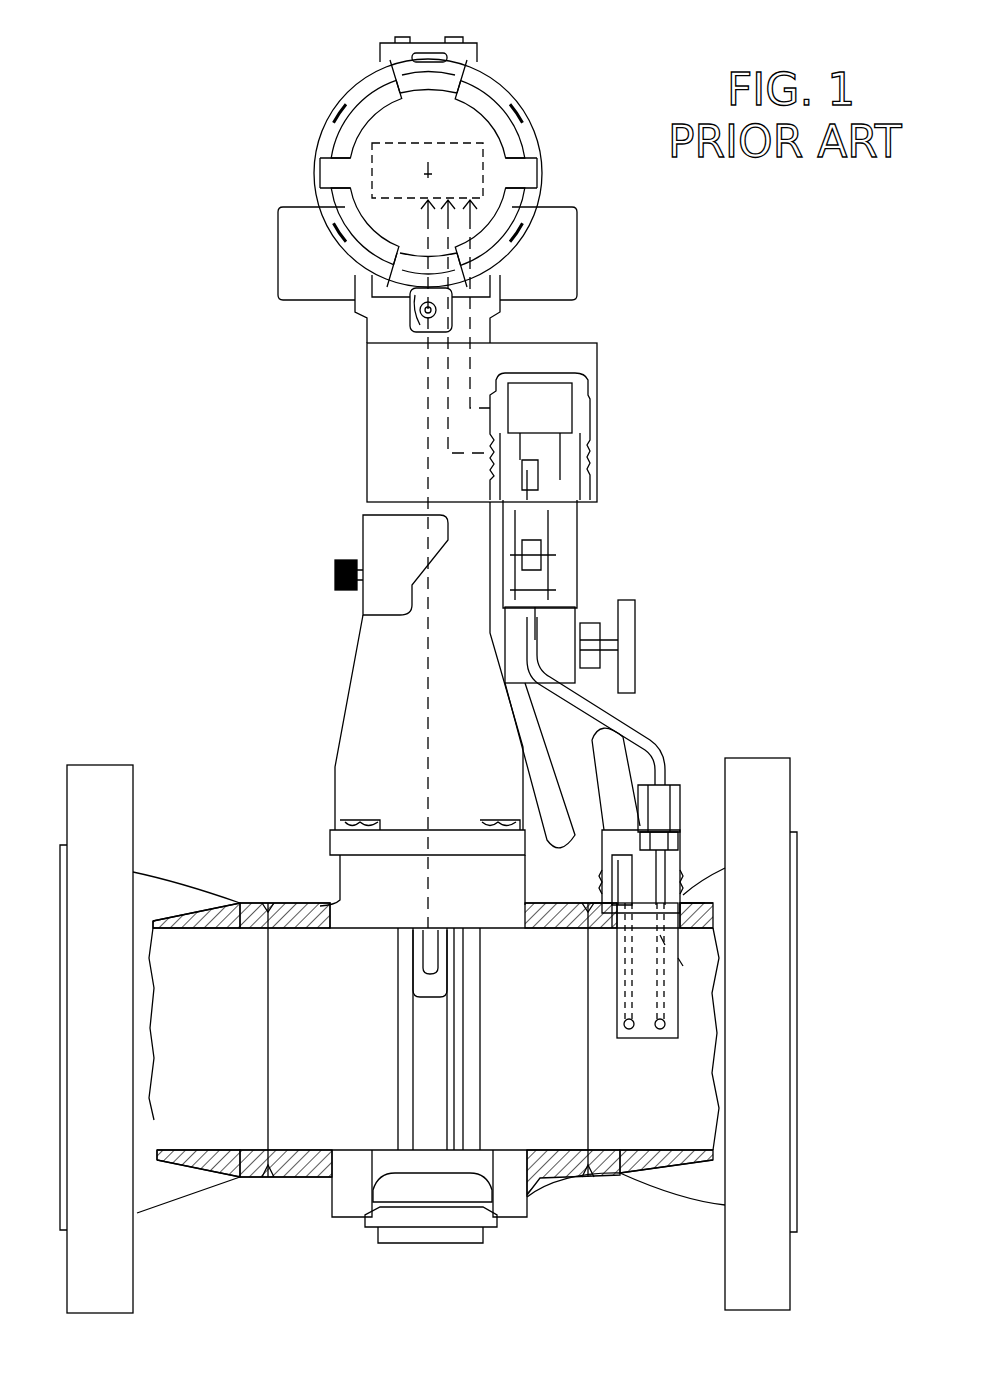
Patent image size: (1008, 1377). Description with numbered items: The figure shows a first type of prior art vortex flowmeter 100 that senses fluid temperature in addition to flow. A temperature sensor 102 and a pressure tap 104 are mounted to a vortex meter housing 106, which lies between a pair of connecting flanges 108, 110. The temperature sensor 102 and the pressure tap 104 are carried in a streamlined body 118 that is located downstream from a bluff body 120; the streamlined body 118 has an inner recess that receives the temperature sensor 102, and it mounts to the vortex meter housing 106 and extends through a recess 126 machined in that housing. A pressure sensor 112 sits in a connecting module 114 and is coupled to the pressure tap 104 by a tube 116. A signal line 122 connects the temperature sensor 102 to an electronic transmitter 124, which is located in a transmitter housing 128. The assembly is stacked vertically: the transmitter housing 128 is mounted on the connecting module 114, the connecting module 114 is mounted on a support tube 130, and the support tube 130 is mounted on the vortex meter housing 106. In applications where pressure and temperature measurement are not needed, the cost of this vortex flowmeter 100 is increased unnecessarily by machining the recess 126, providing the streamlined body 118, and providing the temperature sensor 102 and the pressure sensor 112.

The vortex flowmeter 100 is at (140, 125).
The temperature sensor 102 is at (683, 962).
The pressure tap 104 is at (665, 940).
The vortex meter housing 106 is at (232, 860).
The connecting flange 108 is at (100, 765).
The connecting flange 110 is at (790, 780).
The pressure sensor 112 is at (575, 395).
The connecting module 114 is at (597, 343).
The tube 116 is at (563, 727).
The streamlined body 118 is at (680, 1015).
The bluff body 120 is at (400, 1020).
The signal line 122 is at (628, 727).
The electronic transmitter 124 is at (483, 150).
The recess 126 is at (618, 932).
The transmitter housing 128 is at (512, 90).
The support tube 130 is at (330, 765).